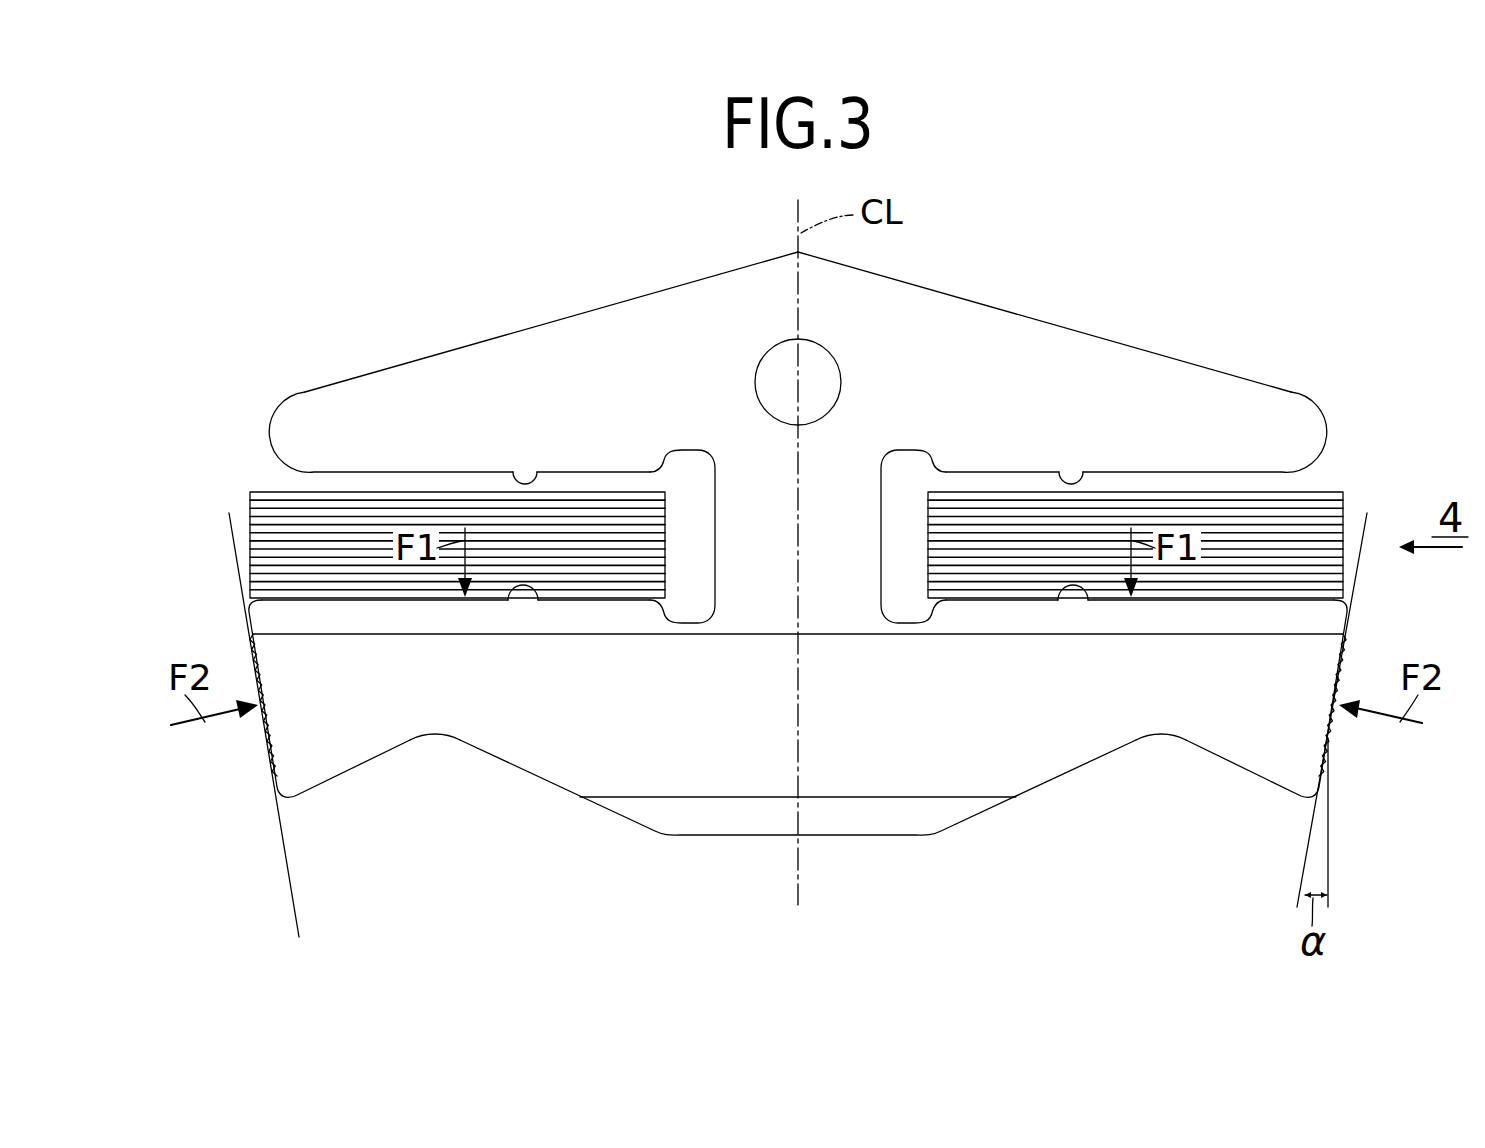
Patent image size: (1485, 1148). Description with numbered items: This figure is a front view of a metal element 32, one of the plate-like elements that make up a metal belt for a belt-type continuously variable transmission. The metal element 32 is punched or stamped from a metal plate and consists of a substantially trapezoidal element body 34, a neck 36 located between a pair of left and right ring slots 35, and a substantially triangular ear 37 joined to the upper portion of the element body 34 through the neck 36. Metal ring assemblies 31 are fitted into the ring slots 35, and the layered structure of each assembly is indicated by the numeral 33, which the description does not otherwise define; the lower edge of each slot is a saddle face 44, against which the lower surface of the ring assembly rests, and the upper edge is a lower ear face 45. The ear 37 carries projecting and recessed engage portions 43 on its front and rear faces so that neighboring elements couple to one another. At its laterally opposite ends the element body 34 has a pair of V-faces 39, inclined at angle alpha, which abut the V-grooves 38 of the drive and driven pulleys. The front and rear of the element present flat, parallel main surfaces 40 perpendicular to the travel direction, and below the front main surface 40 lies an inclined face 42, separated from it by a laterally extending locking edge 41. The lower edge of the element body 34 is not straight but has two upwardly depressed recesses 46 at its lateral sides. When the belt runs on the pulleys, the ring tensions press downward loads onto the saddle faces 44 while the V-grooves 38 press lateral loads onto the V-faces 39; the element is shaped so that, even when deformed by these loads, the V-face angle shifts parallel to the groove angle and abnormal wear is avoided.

The metal ring assembly 31 is at (810, 501).
The metal element 32 is at (798, 429).
The laminated plates 33 is at (351, 516).
The element body 34 is at (1012, 752).
The ring slot 35 is at (687, 500).
The neck 36 is at (752, 552).
The ear 37 is at (652, 320).
The V-groove 38 is at (287, 838).
The V-face 39 is at (268, 733).
The main surface 40 is at (856, 542).
The locking edge 41 is at (642, 635).
The inclined face 42 is at (808, 681).
The engage portion 43 is at (813, 388).
The saddle face 44 is at (535, 588).
The lower ear face 45 is at (531, 485).
The recess 46 is at (423, 735).